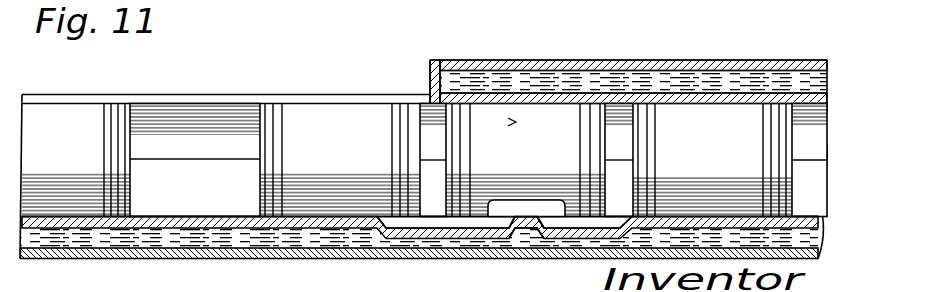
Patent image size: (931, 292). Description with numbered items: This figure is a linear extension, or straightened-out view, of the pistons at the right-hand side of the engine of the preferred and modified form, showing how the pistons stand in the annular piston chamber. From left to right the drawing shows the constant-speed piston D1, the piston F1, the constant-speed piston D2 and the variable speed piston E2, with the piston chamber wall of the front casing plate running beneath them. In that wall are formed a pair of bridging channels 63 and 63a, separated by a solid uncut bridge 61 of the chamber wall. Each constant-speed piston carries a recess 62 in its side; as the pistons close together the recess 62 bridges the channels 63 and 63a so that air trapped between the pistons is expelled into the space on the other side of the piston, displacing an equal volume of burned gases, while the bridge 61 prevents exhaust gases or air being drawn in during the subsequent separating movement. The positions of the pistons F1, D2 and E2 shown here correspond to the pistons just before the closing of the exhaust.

The ridge between recesses 61 is at (516, 226).
The recess 62 is at (523, 208).
The bridging channel 63 is at (438, 226).
The bridging channel 63a is at (573, 222).
The constant-speed piston D1 is at (76, 174).
The piston F1 is at (340, 173).
The constant-speed piston D2 is at (525, 167).
The variable speed piston E2 is at (712, 173).